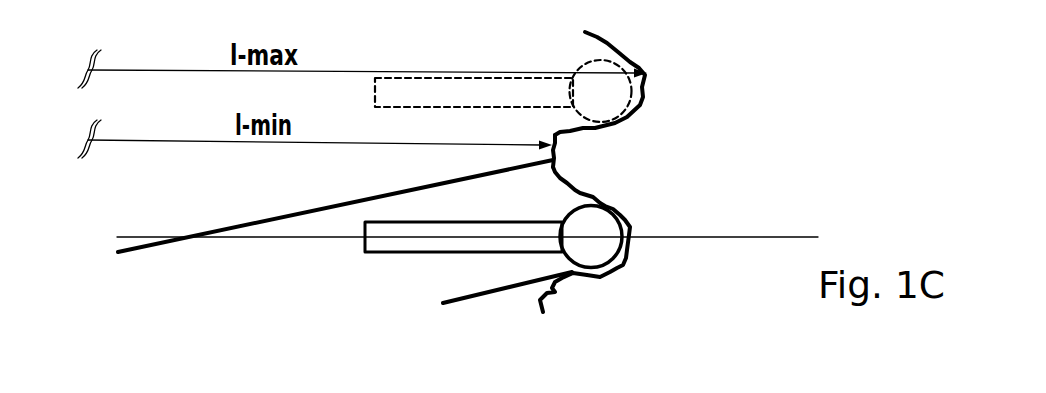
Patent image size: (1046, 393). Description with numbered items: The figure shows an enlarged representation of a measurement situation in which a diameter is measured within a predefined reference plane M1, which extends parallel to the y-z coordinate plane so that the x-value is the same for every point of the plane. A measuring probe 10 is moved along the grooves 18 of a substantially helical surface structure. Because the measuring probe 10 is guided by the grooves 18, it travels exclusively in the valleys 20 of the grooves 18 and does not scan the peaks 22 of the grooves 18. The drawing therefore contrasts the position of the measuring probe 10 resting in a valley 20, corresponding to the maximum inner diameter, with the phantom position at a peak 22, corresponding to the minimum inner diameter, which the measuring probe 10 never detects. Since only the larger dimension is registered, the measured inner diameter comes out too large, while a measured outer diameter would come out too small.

The measuring probe 10 is at (584, 245).
The grooves 18 is at (330, 209).
The valleys 20 is at (643, 82).
The peaks 22 is at (553, 155).
The reference plane M1 is at (795, 237).